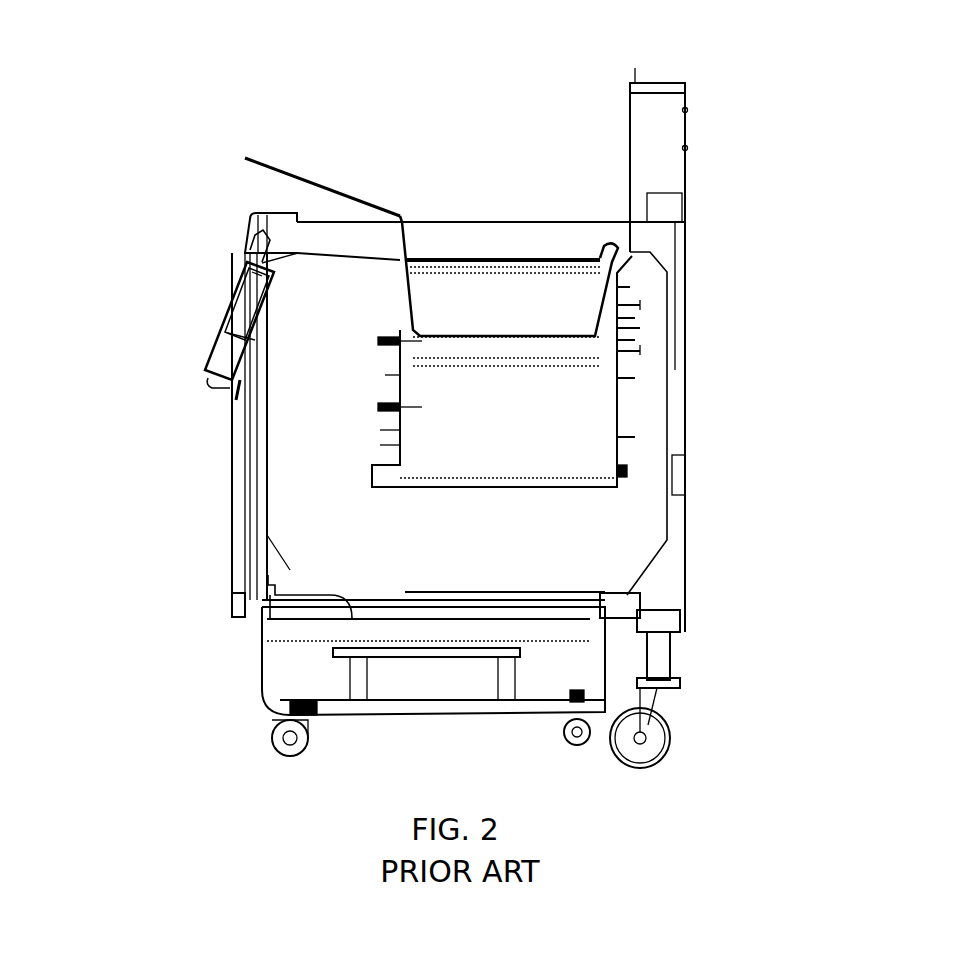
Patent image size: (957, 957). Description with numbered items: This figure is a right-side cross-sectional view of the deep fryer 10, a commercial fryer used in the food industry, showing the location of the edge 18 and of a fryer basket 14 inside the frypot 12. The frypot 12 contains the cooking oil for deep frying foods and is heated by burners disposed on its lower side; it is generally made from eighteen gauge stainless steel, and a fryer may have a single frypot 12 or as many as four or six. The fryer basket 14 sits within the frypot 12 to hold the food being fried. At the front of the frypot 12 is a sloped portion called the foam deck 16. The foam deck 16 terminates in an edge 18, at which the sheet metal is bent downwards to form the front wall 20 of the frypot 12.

The deep fryer 10 is at (840, 114).
The frypot 12 is at (468, 213).
The fryer basket 14 is at (362, 188).
The foam deck 16 is at (328, 264).
The edge 18 is at (392, 274).
The front wall 20 is at (410, 333).